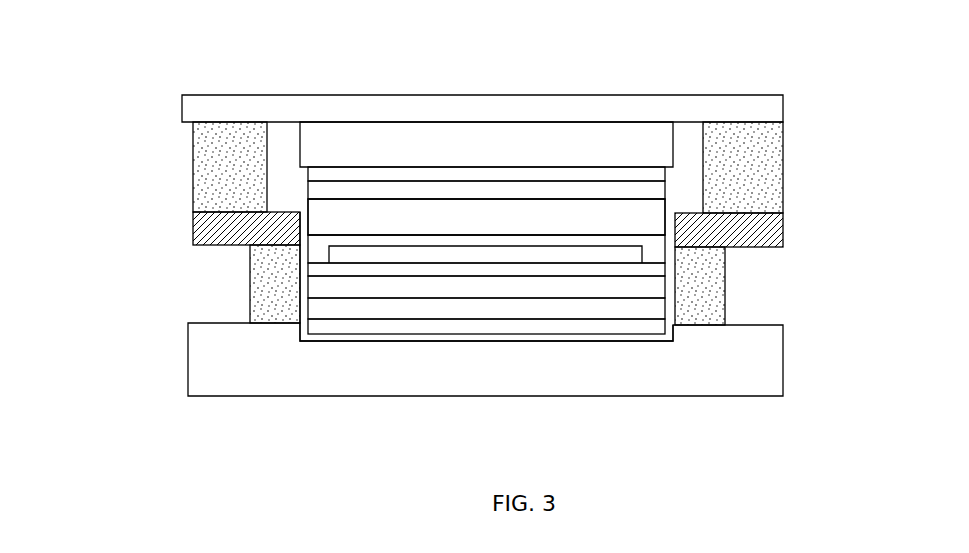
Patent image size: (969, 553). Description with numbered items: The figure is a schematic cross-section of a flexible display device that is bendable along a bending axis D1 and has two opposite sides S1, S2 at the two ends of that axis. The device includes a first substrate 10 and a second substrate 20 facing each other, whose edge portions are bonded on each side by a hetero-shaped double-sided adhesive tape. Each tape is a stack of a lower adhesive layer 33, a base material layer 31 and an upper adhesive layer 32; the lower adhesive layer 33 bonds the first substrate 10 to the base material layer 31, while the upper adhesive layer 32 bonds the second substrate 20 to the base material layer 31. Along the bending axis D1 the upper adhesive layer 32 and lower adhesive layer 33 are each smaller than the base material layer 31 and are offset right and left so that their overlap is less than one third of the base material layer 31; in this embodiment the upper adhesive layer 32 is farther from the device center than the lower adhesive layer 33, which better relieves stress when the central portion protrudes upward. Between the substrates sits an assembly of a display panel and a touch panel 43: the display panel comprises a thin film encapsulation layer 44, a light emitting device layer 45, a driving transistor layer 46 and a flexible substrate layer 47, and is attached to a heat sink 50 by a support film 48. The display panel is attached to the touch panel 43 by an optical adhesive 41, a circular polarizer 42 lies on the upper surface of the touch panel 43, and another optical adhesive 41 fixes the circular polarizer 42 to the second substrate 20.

The first substrate 10 is at (372, 377).
The second substrate 20 is at (257, 108).
The base material layer 31 is at (188, 240).
The upper adhesive layer 32 is at (208, 177).
The lower adhesive layer 33 is at (260, 297).
The optical adhesive 41 is at (640, 137).
The circular polarizer 42 is at (652, 175).
The touch panel 43 is at (655, 194).
The thin film encapsulation layer 44 is at (642, 215).
The light emitting device layer 45 is at (653, 242).
The driving transistor layer 46 is at (643, 272).
The flexible substrate layer 47 is at (650, 288).
The support film 48 is at (648, 308).
The heat sink 50 is at (653, 327).
The first side S1 is at (150, 129).
The second side S2 is at (802, 121).
The bending axis D1 is at (315, 58).